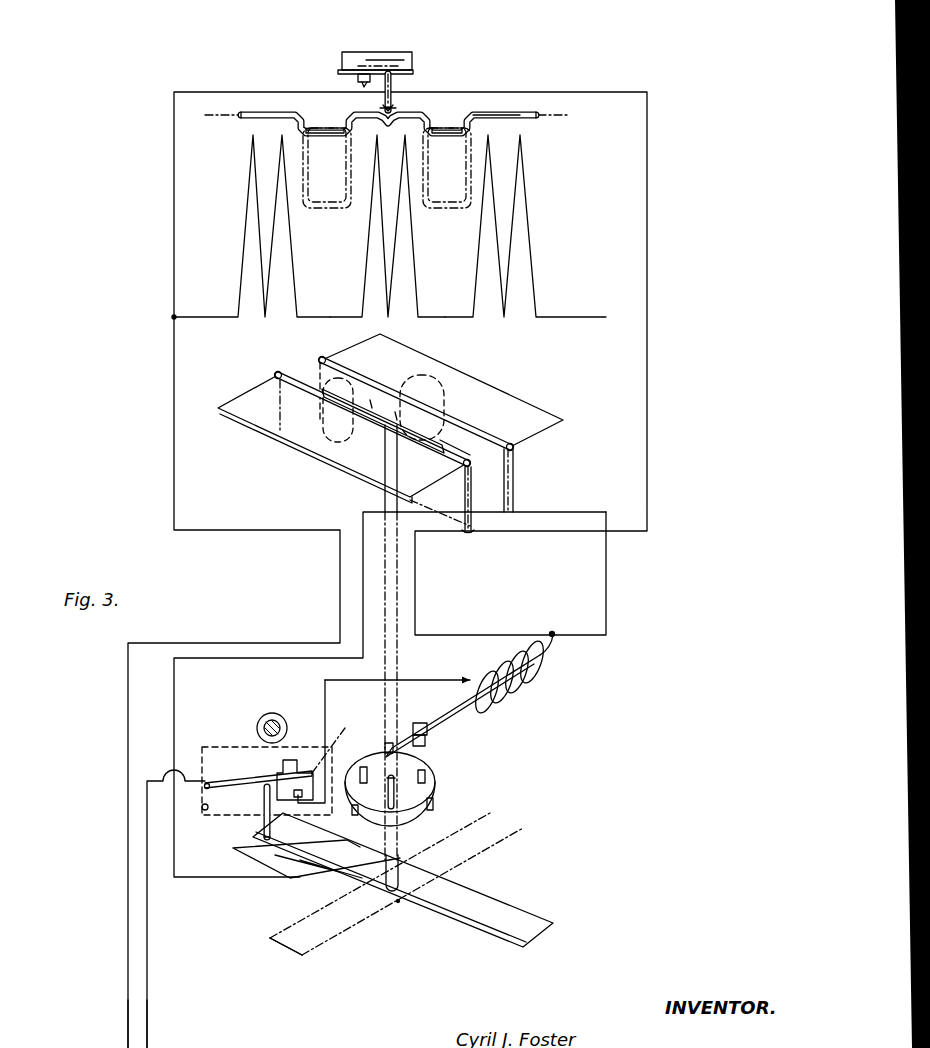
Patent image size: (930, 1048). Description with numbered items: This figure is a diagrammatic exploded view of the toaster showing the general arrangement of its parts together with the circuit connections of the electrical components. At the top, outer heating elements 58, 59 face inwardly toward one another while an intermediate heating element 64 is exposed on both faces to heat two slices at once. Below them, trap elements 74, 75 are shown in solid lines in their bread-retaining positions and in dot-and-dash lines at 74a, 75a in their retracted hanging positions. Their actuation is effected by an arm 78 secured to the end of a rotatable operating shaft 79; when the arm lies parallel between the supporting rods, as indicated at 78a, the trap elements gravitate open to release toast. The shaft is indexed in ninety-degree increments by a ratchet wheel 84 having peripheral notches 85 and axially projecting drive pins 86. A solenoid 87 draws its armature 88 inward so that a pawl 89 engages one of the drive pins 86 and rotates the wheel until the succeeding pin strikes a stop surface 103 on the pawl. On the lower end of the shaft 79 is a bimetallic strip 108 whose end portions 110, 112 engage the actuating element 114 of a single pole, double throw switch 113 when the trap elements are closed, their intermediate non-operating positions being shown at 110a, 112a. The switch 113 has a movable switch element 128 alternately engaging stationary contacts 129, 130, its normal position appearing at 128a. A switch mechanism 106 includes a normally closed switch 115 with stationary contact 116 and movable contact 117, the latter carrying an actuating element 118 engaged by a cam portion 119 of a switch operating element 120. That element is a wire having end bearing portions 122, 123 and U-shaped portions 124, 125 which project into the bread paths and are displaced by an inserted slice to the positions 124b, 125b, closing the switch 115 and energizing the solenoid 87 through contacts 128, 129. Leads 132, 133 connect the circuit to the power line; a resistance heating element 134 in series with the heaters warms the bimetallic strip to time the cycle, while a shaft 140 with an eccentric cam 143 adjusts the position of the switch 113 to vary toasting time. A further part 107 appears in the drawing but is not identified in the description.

The heating element 58 is at (243, 229).
The heating element 59 is at (528, 224).
The heating element 64 is at (415, 247).
The trap element 74 is at (478, 393).
The retracted position of trap element 74a is at (515, 492).
The trap element 75 is at (300, 428).
The retracted position of trap element 75a is at (476, 533).
The arm 78 is at (378, 403).
The release position of arm 78a is at (461, 430).
The operating shaft 79 is at (398, 617).
The ratchet wheel 84 is at (416, 790).
The peripheral notches 85 is at (360, 768).
The drive pins 86 is at (386, 740).
The solenoid 87 is at (517, 697).
The armature 88 is at (457, 706).
The pawl 89 is at (427, 738).
The stop surface 103 is at (385, 788).
The switch mechanism 106 is at (410, 106).
The crossing point 107 is at (401, 906).
The bimetallic strip 108 is at (379, 888).
The end portion of bimetallic strip 110 is at (553, 925).
The intermediate position of end portion 110a is at (519, 823).
The end portion of bimetallic strip 112 is at (247, 850).
The intermediate position of end portion 112a is at (291, 949).
The single pole double throw switch 113 is at (226, 746).
The actuating element 114 is at (262, 823).
The single pole single throw switch 115 is at (403, 72).
The stationary contact 116 is at (360, 86).
The movable contact 117 is at (372, 72).
The actuating element 118 is at (392, 92).
The cam portion 119 is at (390, 113).
The switch operating element 120 is at (430, 113).
The end bearing portion 122 is at (266, 112).
The end bearing portion 123 is at (509, 113).
The U-shaped portion 124 is at (324, 134).
The displaced position of U-shaped portion 124b is at (325, 212).
The U-shaped portion 125 is at (450, 138).
The displaced position of U-shaped portion 125b is at (437, 208).
The movable switch element 128 is at (270, 783).
The normal position of movable switch element 128a is at (323, 760).
The stationary contact 129 is at (293, 794).
The stationary contact 130 is at (300, 760).
The lead 132 is at (128, 1032).
The lead 133 is at (148, 1031).
The resistance heating element 134 is at (294, 878).
The shaft 140 is at (270, 712).
The eccentric cam 143 is at (281, 716).